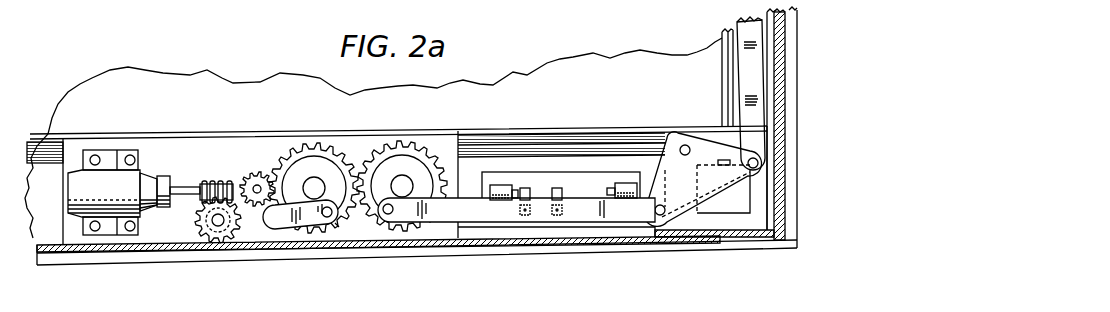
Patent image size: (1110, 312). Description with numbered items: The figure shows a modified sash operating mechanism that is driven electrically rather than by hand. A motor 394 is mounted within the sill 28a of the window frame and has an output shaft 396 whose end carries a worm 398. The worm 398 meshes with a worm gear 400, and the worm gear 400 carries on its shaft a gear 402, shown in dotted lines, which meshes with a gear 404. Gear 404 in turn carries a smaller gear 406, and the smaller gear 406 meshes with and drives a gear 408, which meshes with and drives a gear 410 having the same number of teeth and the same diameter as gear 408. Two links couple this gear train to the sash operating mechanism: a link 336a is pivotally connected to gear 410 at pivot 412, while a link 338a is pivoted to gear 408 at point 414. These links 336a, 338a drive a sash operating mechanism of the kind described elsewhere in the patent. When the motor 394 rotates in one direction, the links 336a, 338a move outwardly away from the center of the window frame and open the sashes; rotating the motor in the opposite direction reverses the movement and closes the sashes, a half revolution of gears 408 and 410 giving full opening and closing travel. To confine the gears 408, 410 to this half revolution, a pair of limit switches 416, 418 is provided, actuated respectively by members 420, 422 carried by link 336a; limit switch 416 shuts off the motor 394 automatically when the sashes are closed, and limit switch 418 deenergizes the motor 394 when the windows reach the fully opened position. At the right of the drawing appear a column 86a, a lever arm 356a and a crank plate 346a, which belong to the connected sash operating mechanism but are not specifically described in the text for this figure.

The motor 394 is at (117, 200).
The output shaft 396 is at (185, 196).
The worm 398 is at (208, 180).
The gear 402 is at (194, 240).
The gear 404 is at (247, 158).
The smaller gear 406 is at (257, 172).
The gear 408 is at (333, 170).
The gear 410 is at (408, 168).
The worm gear 400 is at (237, 228).
The link 338a is at (327, 218).
The pivot point 414 is at (339, 228).
The pivot 412 is at (397, 211).
The link 336a is at (450, 216).
The sill 28a is at (231, 260).
The limit switch 416 is at (502, 186).
The limit switch 418 is at (622, 184).
The member 420 is at (526, 190).
The member 422 is at (558, 190).
The support column 86a is at (719, 92).
The lever arm 356a is at (752, 43).
The crank plate 346a is at (685, 197).